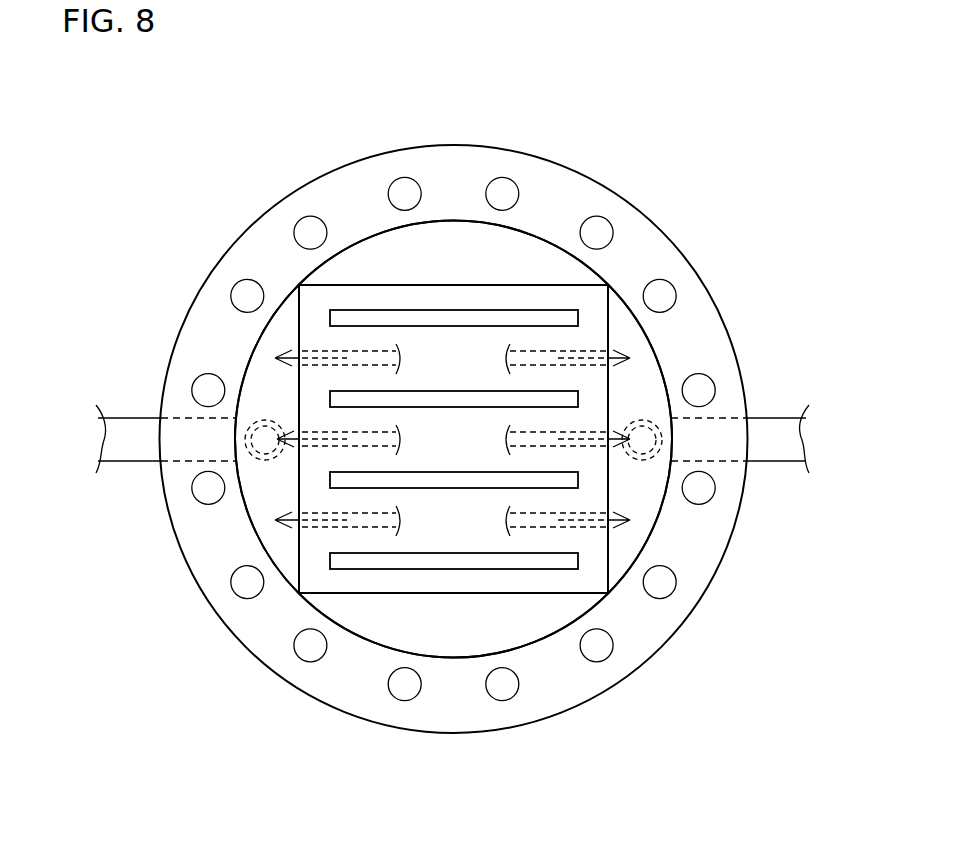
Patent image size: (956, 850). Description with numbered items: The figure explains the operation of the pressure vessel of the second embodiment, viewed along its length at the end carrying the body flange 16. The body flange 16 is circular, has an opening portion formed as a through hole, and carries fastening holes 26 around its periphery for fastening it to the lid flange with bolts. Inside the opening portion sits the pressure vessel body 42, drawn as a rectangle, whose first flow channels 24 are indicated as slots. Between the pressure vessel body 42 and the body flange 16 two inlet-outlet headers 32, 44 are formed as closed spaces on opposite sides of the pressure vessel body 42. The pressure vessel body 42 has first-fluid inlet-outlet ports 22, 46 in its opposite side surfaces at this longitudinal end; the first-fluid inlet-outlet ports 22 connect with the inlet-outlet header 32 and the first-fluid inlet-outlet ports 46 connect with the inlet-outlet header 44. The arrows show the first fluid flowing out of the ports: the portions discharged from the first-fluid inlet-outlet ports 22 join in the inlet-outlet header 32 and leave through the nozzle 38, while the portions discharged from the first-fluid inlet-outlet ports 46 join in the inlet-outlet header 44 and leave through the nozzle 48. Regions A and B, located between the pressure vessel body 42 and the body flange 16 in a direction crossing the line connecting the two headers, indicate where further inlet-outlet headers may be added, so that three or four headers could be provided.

The body flange 16 is at (450, 145).
The first-fluid inlet-outlet ports 22 is at (613, 368).
The slot 24 is at (455, 309).
The fastening holes 26 is at (310, 222).
The inlet-outlet header 32 is at (620, 300).
The nozzle 38 is at (778, 417).
The pressure vessel body 42 is at (463, 284).
The inlet-outlet header 44 is at (260, 352).
The first-fluid inlet-outlet ports 46 is at (322, 348).
The nozzle 48 is at (120, 463).
The region A is at (485, 240).
The region B is at (488, 625).